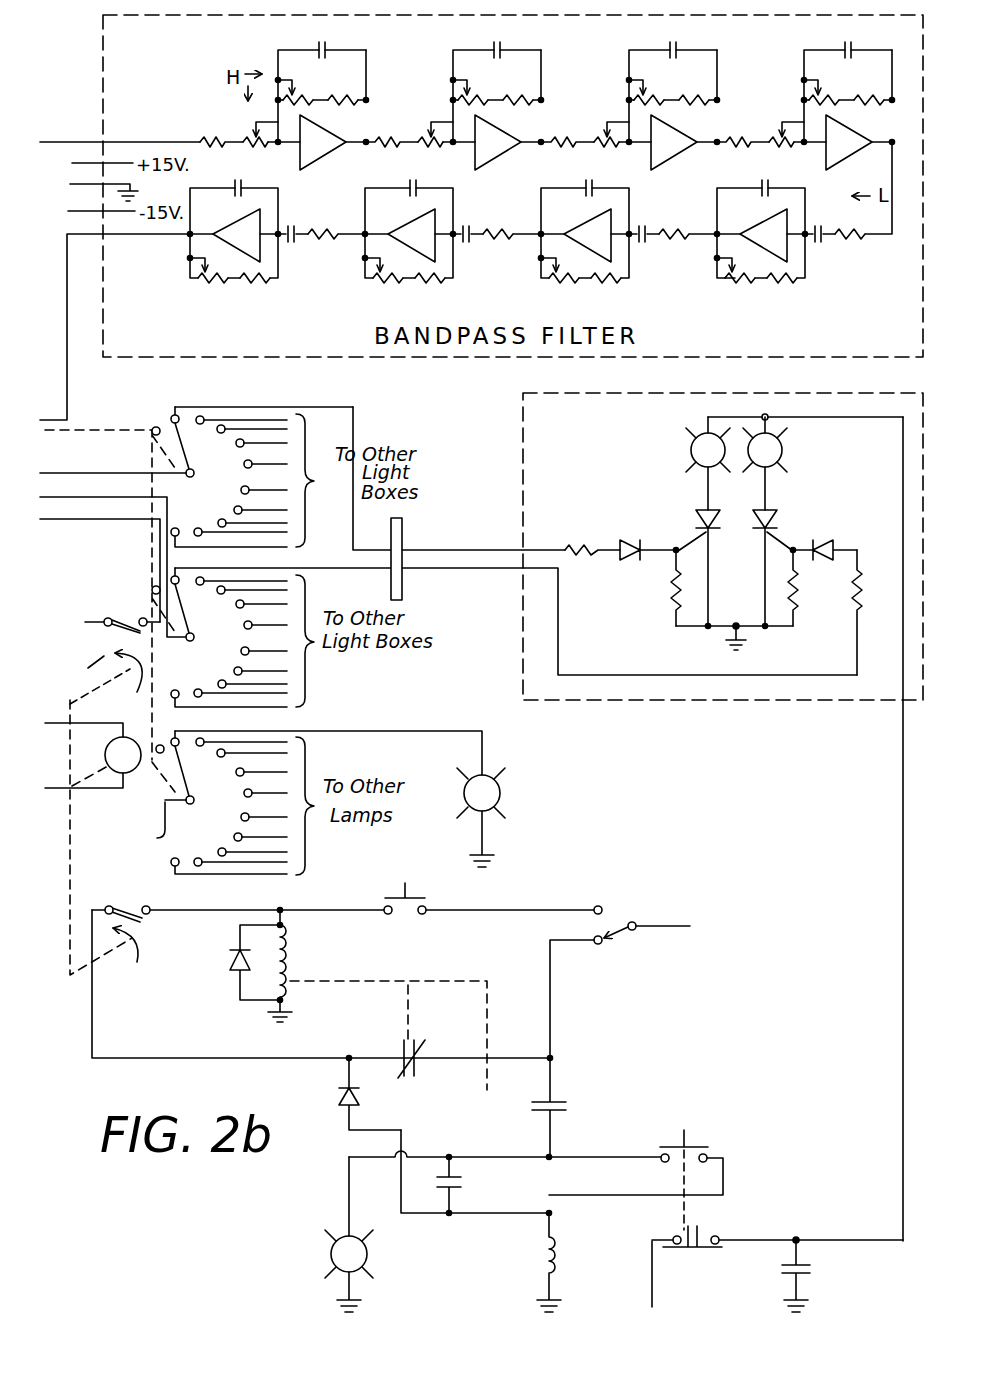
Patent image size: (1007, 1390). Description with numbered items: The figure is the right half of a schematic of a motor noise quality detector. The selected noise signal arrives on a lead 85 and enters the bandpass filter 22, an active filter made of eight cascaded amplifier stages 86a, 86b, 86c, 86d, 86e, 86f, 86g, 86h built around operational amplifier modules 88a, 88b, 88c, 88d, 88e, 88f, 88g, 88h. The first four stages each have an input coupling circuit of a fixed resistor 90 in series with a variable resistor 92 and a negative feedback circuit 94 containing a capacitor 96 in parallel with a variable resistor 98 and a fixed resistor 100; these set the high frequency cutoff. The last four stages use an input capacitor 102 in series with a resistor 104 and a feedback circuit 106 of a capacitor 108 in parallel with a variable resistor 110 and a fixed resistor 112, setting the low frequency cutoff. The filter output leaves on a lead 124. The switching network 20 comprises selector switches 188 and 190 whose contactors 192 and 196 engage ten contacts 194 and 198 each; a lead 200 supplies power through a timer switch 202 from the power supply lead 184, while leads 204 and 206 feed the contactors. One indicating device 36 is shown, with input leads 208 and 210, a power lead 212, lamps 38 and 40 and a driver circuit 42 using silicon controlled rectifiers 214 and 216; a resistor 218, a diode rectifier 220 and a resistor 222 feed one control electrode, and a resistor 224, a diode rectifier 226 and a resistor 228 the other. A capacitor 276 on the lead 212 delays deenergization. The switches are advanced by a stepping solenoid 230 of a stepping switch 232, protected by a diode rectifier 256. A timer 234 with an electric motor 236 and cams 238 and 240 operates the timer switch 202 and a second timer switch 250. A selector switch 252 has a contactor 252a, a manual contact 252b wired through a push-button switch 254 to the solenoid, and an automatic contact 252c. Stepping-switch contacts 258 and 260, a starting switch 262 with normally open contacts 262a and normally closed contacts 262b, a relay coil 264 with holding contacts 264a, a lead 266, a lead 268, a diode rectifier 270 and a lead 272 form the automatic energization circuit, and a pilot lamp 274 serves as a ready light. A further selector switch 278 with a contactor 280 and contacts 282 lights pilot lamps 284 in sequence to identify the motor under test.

The switching network 20 is at (223, 403).
The bandpass filter 22 is at (103, 52).
The indicating circuit 36 is at (708, 700).
The lamp 38 is at (783, 438).
The lamp 40 is at (690, 442).
The driver circuit 42 is at (636, 634).
The lead 85 is at (120, 123).
The amplifier stage 86a is at (295, 102).
The amplifier stage 86b is at (487, 102).
The amplifier stage 86c is at (658, 102).
The amplifier stage 86d is at (832, 102).
The amplifier stage 86e is at (784, 262).
The amplifier stage 86f is at (608, 255).
The amplifier stage 86g is at (430, 257).
The amplifier stage 86h is at (255, 261).
The operational amplifier module 88a is at (340, 166).
The operational amplifier module 88b is at (508, 158).
The operational amplifier module 88c is at (684, 158).
The operational amplifier module 88d is at (859, 158).
The operational amplifier module 88e is at (778, 262).
The operational amplifier module 88f is at (601, 262).
The operational amplifier module 88g is at (425, 262).
The operational amplifier module 88h is at (250, 262).
The fixed resistor 90 is at (207, 135).
The variable resistor 92 is at (257, 150).
The negative feedback circuit 94 is at (368, 72).
The capacitor 96 is at (322, 40).
The variable resistor 98 is at (565, 85).
The fixed resistor 100 is at (350, 98).
The capacitor 102 is at (289, 225).
The resistor 104 is at (340, 242).
The negative feedback circuit 106 is at (730, 318).
The capacitor 108 is at (233, 178).
The variable resistor 110 is at (200, 290).
The fixed resistor 112 is at (258, 288).
The lead 124 is at (68, 404).
The power supply lead 184 is at (86, 622).
The selector switch 188 is at (242, 647).
The selector switch 190 is at (224, 458).
The contactor 192 is at (180, 592).
The contacts 194 is at (234, 671).
The contactor 196 is at (180, 430).
The contacts 198 is at (236, 510).
The lead 200 is at (108, 515).
The timer switch 202 is at (102, 614).
The lead 204 is at (98, 500).
The lead 206 is at (103, 480).
The input lead 208 is at (487, 572).
The input lead 210 is at (482, 548).
The lead 212 is at (900, 800).
The silicon controlled rectifier 214 is at (785, 518).
The silicon controlled rectifier 216 is at (690, 520).
The resistor 218 is at (852, 606).
The diode rectifier 220 is at (820, 536).
The resistor 222 is at (800, 605).
The resistor 224 is at (582, 542).
The diode rectifier 226 is at (634, 538).
The resistor 228 is at (668, 600).
The stepping solenoid 230 is at (292, 955).
The stepping switch 232 is at (296, 994).
The timer 234 is at (108, 822).
The electric motor 236 is at (105, 750).
The timer cam 238 is at (94, 672).
The timer cam 240 is at (138, 960).
The timer switch 250 is at (138, 906).
The selector switch 252 is at (631, 959).
The contactor 252a is at (640, 930).
The manual operating contact 252b is at (594, 906).
The automatic operating contact 252c is at (594, 946).
The push-button switch 254 is at (398, 888).
The diode rectifier 256 is at (230, 978).
The contacts 258 is at (407, 1080).
The contacts 260 is at (570, 1104).
The starting switch 262 is at (726, 1157).
The normally open contacts 262a is at (712, 1150).
The normally closed contacts 262b is at (705, 1232).
The relay coil 264 is at (560, 1245).
The contacts 264a is at (466, 1180).
The lead 266 is at (490, 1156).
The lead 268 is at (432, 1222).
The diode rectifier 270 is at (335, 1092).
The lead 272 is at (128, 1062).
The pilot lamp 274 is at (328, 1258).
The capacitor 276 is at (812, 1270).
The selector switch 278 is at (219, 807).
The contactor 280 is at (180, 754).
The contacts 282 is at (232, 836).
The pilot lamp 284 is at (503, 788).